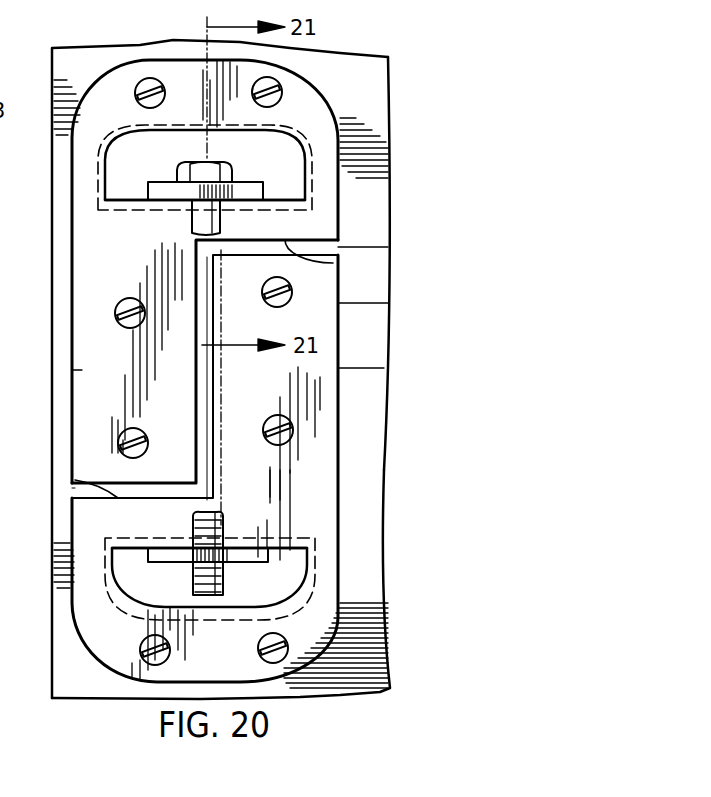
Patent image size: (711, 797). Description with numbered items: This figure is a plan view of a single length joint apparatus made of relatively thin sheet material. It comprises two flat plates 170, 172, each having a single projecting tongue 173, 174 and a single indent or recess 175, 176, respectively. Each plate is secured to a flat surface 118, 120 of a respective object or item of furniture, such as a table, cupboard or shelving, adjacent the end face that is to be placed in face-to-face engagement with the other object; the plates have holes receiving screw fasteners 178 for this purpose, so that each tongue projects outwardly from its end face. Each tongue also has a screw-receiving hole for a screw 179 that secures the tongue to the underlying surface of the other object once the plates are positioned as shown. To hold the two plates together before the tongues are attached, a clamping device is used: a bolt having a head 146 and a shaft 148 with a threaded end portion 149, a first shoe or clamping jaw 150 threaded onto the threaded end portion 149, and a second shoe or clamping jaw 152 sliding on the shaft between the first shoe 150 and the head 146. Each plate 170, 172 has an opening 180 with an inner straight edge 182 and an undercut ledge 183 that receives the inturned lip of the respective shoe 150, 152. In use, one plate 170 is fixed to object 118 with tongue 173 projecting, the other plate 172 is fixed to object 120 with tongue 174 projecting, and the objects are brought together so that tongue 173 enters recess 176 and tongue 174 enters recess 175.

The flat surface 118 is at (62, 196).
The flat surface 120 is at (56, 558).
The head 146 is at (205, 162).
The shaft 148 is at (197, 224).
The threaded end portion 149 is at (197, 515).
The first shoe 150 is at (175, 552).
The second shoe 152 is at (167, 190).
The flat plate 170 is at (320, 125).
The flat plate 172 is at (328, 443).
The tongue 173 is at (90, 408).
The tongue 174 is at (327, 305).
The recess 175 is at (338, 262).
The recess 176 is at (93, 483).
The screw fasteners 178 is at (253, 85).
The screw 179 is at (120, 437).
The opening 180 is at (275, 157).
The inner straight edge 182 is at (307, 178).
The undercut ledge 183 is at (283, 125).